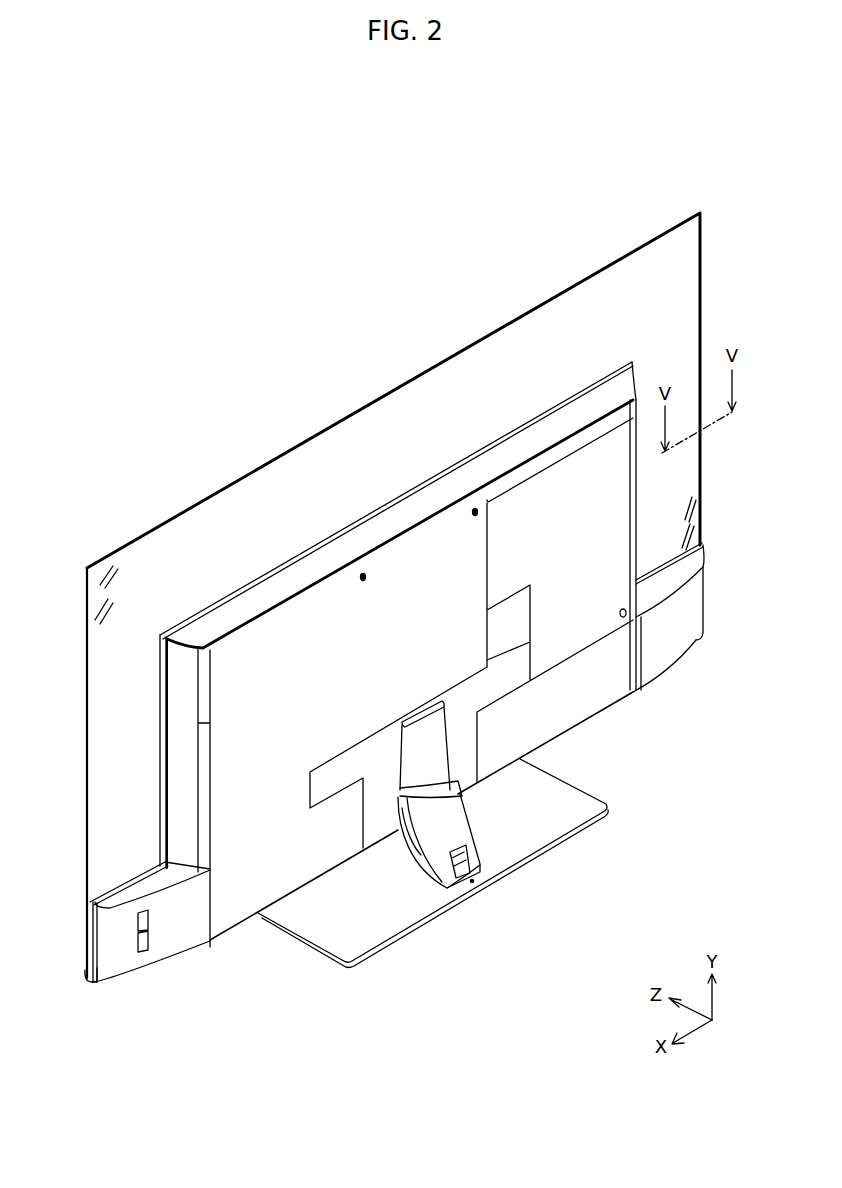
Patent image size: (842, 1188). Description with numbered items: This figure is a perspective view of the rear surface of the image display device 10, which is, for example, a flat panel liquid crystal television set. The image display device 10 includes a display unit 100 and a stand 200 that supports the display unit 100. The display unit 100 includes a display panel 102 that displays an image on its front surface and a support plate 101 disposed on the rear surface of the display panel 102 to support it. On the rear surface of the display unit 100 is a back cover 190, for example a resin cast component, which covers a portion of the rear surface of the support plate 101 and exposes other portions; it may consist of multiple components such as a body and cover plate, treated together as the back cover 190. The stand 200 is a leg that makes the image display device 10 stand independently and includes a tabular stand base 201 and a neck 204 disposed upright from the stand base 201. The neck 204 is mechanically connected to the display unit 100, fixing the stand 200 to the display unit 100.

The image display device 10 is at (238, 291).
The display unit 100 is at (307, 262).
The support plate 101 is at (372, 450).
The display panel 102 is at (335, 428).
The back cover 190 is at (270, 832).
The stand 200 is at (602, 865).
The stand base 201 is at (382, 908).
The neck 204 is at (447, 820).